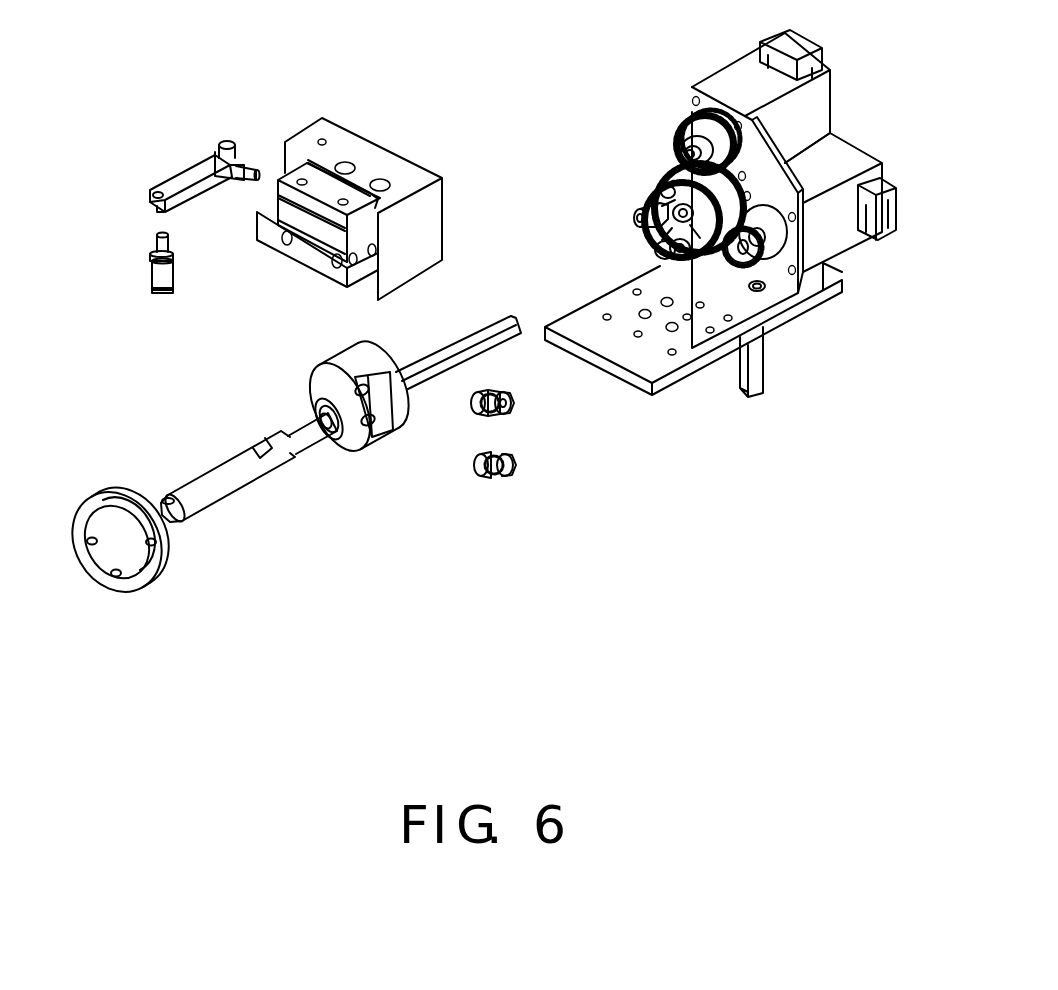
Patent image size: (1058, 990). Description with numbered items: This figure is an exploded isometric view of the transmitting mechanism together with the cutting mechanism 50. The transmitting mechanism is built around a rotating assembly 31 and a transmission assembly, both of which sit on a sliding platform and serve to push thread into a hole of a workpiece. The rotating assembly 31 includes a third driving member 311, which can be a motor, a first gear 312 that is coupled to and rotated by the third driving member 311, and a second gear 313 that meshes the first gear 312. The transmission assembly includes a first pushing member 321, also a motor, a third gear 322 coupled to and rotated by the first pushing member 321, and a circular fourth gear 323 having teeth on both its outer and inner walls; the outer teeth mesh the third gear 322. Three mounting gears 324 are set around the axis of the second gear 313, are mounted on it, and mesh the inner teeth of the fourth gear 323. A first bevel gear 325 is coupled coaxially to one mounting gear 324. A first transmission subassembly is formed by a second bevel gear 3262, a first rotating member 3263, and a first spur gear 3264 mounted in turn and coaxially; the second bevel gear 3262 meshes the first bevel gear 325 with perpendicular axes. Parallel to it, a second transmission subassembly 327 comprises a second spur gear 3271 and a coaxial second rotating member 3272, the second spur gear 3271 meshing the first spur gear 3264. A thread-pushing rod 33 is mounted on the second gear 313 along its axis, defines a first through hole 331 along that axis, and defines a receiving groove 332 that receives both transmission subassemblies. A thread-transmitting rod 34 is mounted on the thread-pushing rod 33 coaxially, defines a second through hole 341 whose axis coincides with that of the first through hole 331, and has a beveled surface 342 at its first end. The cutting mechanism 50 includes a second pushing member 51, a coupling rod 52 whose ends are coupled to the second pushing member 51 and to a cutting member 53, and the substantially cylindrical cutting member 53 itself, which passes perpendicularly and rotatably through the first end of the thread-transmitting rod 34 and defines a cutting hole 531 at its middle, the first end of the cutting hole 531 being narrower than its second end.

The rotating assembly 31 is at (612, 0).
The third driving member 311 is at (735, 78).
The first gear 312 is at (688, 138).
The second gear 313 is at (672, 163).
The first pushing member 321 is at (838, 232).
The third gear 322 is at (770, 262).
The fourth gear 323 is at (712, 265).
The mounting gears 324 is at (697, 270).
The first bevel gear 325 is at (633, 203).
The second bevel gear 3262 is at (480, 397).
The first rotating member 3263 is at (487, 395).
The first spur gear 3264 is at (503, 418).
The second transmission subassembly 327 is at (625, 567).
The second spur gear 3271 is at (510, 480).
The second rotating member 3272 is at (485, 478).
The thread-pushing rod 33 is at (372, 365).
The first through hole 331 is at (324, 425).
The receiving groove 332 is at (380, 407).
The thread-transmitting rod 34 is at (227, 488).
The second through hole 341 is at (163, 517).
The beveled surface 342 is at (165, 505).
The cutting mechanism 50 is at (307, 337).
The second pushing member 51 is at (310, 225).
The coupling rod 52 is at (190, 193).
The cutting member 53 is at (168, 288).
The cutting hole 531 is at (157, 273).